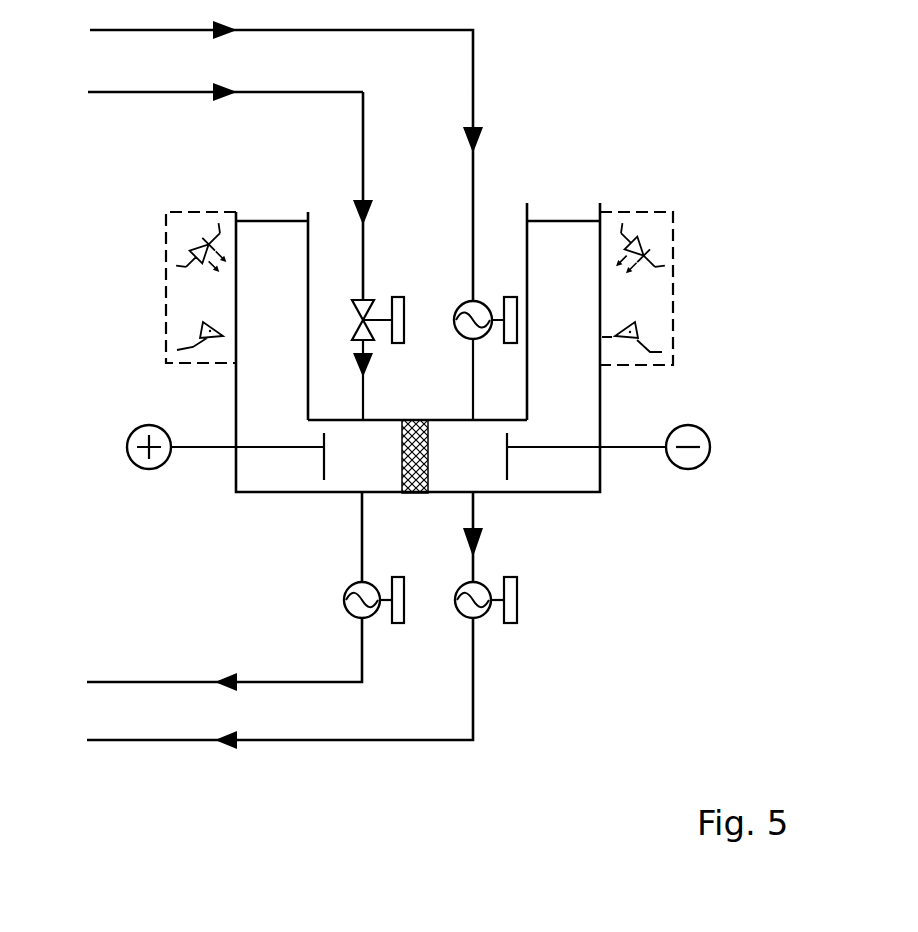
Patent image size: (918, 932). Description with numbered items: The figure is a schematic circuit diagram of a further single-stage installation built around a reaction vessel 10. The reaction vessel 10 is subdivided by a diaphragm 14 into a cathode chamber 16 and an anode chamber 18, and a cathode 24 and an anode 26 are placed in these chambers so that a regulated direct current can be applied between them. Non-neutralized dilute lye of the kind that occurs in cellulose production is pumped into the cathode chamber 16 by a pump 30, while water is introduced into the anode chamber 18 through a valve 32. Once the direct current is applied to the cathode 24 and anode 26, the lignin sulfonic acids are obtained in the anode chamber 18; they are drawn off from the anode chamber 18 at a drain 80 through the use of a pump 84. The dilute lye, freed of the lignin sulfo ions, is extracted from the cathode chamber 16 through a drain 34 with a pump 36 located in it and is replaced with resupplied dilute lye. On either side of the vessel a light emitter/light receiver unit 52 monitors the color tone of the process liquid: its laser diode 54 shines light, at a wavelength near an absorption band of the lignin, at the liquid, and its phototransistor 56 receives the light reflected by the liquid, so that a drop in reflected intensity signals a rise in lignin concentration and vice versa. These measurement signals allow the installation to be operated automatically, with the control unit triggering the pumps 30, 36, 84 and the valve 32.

The reaction vessel 10 is at (236, 480).
The diaphragm 14 is at (413, 500).
The cathode chamber 16 is at (576, 345).
The anode chamber 18 is at (284, 345).
The cathode 24 is at (507, 452).
The anode 26 is at (331, 415).
The pump 30 is at (479, 301).
The valve 32 is at (364, 300).
The drain 34 is at (476, 567).
The pump 36 is at (484, 615).
The light emitter/light receiver unit 52 is at (165, 248).
The laser diode 54 is at (201, 248).
The phototransistor 56 is at (200, 327).
The drain 80 is at (362, 522).
The pump 84 is at (344, 600).